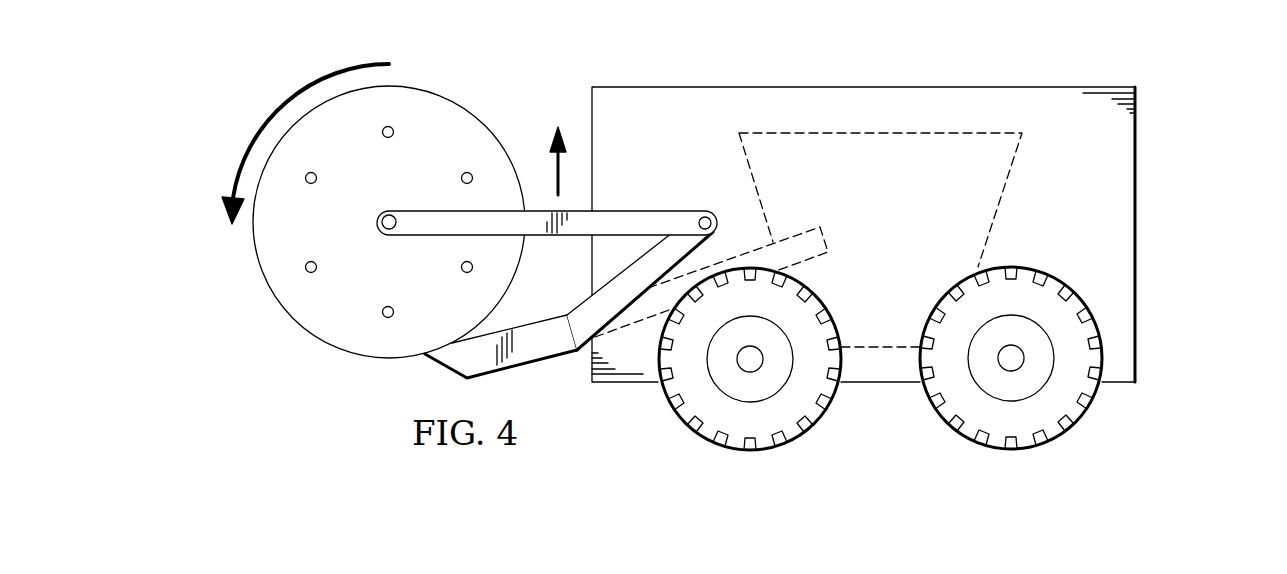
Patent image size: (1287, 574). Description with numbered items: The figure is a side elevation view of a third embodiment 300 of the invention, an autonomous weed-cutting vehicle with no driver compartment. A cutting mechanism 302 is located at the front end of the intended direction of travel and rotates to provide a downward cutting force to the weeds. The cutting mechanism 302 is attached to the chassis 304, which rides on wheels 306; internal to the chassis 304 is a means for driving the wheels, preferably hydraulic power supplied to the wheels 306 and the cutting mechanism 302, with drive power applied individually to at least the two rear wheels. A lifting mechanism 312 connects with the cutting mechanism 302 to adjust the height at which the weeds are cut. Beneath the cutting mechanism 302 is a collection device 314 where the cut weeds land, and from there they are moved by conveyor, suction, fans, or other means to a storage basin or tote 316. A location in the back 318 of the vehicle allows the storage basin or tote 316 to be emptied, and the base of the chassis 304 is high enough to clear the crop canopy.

The embodiment 300 is at (733, 241).
The cutting mechanism 302 is at (325, 330).
The chassis 304 is at (864, 87).
The wheels 306 is at (668, 397).
The lifting mechanism 312 is at (640, 218).
The collection device 314 is at (550, 328).
The storage basin or tote 316 is at (998, 210).
The back of the vehicle 318 is at (1137, 233).